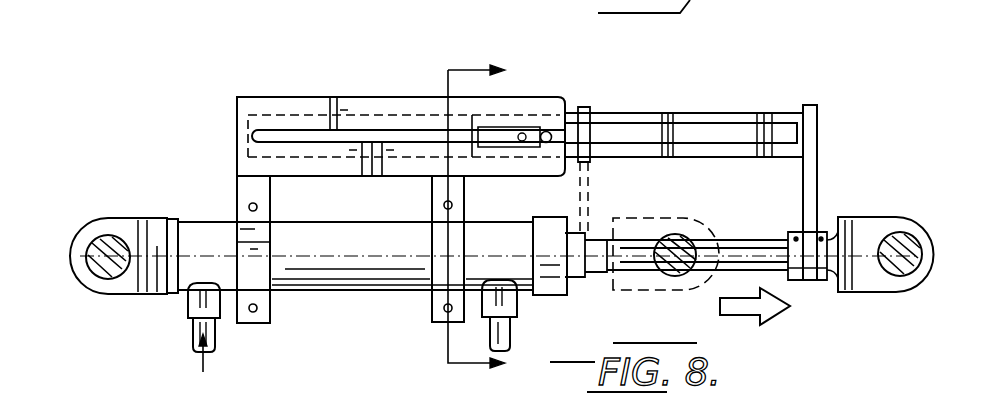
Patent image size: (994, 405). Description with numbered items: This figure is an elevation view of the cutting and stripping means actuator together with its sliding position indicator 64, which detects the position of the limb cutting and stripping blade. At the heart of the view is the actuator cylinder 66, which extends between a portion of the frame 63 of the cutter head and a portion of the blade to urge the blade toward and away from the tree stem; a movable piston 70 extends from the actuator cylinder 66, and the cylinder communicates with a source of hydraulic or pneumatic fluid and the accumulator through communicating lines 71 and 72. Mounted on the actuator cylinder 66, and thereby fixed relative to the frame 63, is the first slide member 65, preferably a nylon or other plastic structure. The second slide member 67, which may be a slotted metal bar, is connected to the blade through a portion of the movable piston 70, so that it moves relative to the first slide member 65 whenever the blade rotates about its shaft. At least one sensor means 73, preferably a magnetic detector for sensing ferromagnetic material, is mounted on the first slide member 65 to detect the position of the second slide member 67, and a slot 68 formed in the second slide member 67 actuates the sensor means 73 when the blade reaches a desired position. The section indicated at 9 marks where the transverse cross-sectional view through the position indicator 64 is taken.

The frame 63 is at (110, 236).
The sliding position indicator 64 is at (318, 97).
The first slide member 65 is at (390, 106).
The actuator cylinder 66 is at (357, 275).
The second slide member 67 is at (712, 122).
The slot 68 is at (528, 141).
The movable piston 70 is at (750, 245).
The communicating line 71 is at (188, 325).
The communicating line 72 is at (500, 338).
The sensor means 73 is at (530, 128).
The section line 9- 9 is at (459, 224).